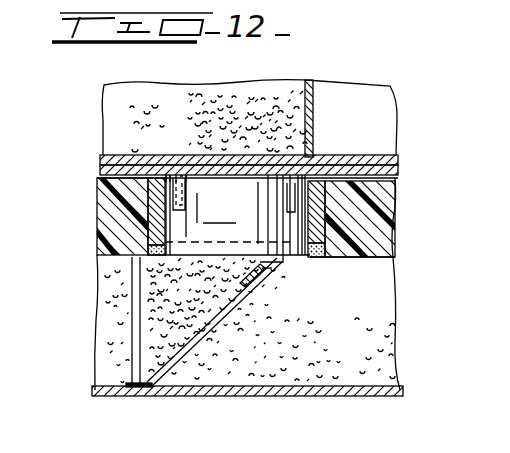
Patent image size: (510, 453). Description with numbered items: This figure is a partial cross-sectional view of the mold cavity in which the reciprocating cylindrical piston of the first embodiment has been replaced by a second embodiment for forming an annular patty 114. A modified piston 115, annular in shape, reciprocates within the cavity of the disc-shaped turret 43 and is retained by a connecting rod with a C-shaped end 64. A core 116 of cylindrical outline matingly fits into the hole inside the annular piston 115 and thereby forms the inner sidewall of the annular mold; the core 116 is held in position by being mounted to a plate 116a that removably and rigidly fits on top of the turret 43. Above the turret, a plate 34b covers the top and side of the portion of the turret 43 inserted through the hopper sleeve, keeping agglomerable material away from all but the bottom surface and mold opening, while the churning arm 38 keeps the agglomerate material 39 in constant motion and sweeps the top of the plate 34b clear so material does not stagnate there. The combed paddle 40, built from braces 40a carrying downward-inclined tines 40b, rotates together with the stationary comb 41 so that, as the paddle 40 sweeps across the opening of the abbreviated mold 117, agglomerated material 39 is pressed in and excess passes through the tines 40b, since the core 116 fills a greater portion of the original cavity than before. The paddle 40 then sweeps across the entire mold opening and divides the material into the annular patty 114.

The churning arm 38 is at (314, 123).
The plate 34b is at (393, 162).
The plate 116a is at (393, 172).
The C-shape end 64 is at (315, 185).
The turret 43 is at (402, 217).
The modified piston 115 is at (330, 229).
The patty 114 is at (324, 258).
The abbreviated mold 117 is at (142, 265).
The core 116 is at (227, 217).
The combed paddle 40 is at (266, 280).
The braces 40a is at (281, 272).
The tines 40b is at (271, 284).
The agglomerate material 39 is at (300, 366).
The stationary comb 41 is at (128, 388).